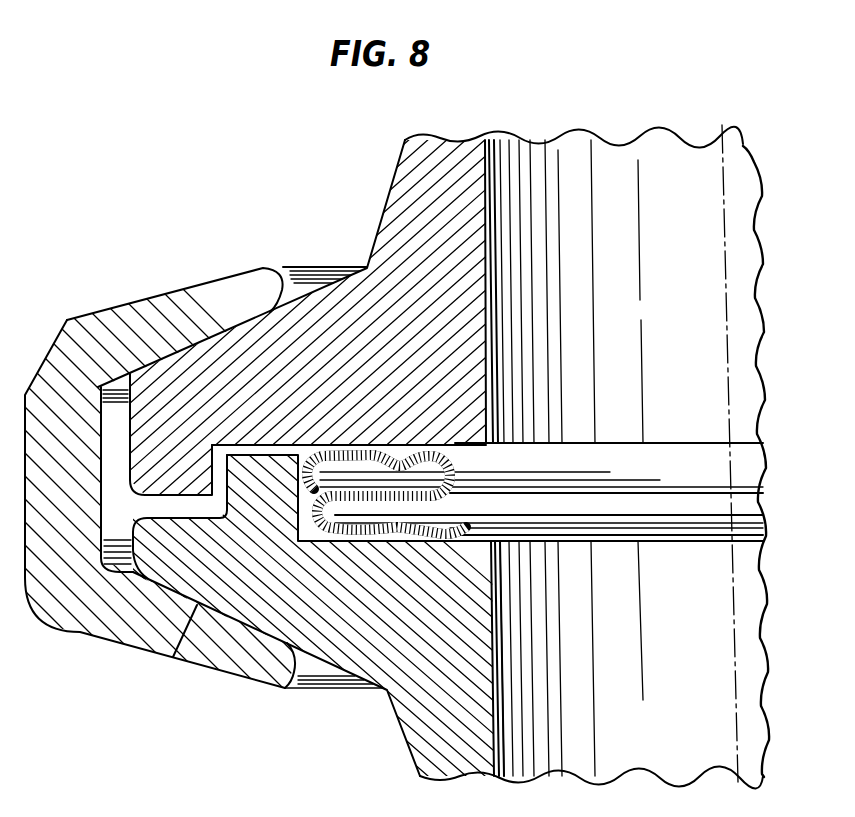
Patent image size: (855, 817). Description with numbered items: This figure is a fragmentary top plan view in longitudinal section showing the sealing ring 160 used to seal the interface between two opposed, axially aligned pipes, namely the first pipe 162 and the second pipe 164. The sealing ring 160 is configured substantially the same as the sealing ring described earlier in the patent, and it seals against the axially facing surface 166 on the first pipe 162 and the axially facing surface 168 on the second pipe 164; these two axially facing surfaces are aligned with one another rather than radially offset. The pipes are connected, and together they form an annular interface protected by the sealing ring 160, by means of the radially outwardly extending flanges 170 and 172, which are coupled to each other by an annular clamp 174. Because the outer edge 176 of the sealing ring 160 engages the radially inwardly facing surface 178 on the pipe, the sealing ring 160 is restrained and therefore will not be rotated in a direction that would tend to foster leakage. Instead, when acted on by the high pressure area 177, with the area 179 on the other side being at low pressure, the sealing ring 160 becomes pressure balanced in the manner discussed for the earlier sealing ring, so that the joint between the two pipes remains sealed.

The sealing ring 160 is at (470, 471).
The first pipe 162 is at (392, 181).
The second pipe 164 is at (389, 697).
The axially facing surface 166 is at (492, 388).
The axially facing surface 168 is at (500, 513).
The radially outwardly extending flange 170 is at (183, 343).
The radially outwardly extending flange 172 is at (173, 657).
The annular clamp 174 is at (80, 633).
The outer edge 176 is at (272, 445).
The high pressure area 177 is at (614, 203).
The radially inwardly facing surface 178 is at (288, 542).
The low pressure area 179 is at (209, 218).